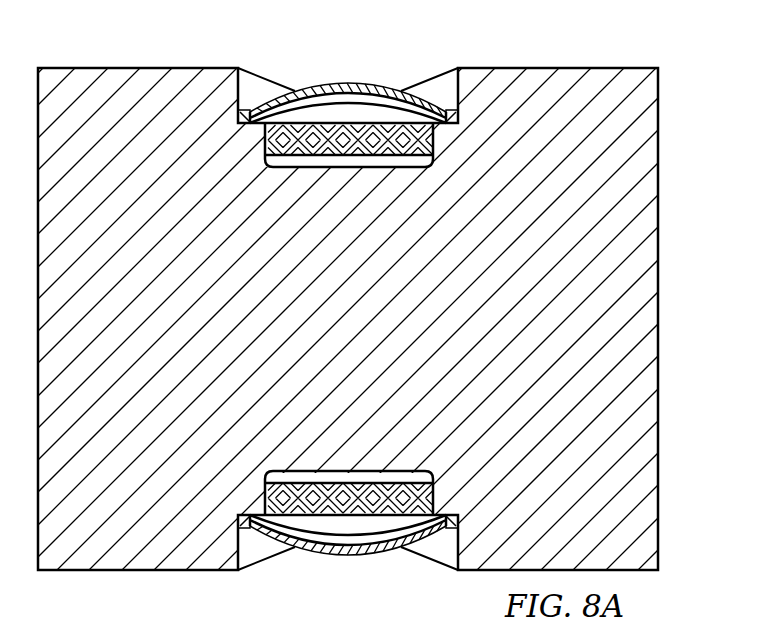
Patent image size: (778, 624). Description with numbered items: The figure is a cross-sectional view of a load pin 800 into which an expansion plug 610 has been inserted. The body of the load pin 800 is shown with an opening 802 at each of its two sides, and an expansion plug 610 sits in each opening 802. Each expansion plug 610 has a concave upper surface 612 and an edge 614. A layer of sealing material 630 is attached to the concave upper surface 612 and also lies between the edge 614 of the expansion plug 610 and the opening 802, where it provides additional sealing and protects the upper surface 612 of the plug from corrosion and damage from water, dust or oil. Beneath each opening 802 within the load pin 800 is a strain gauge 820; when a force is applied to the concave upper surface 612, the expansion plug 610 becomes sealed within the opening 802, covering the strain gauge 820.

The load pin 800 is at (220, 30).
The opening 802 is at (436, 70).
The expansion plug 610 is at (377, 313).
The concave upper surface 612 is at (341, 95).
The edge 614 is at (257, 125).
The sealing material 630 is at (305, 88).
The strain gauge 820 is at (397, 167).